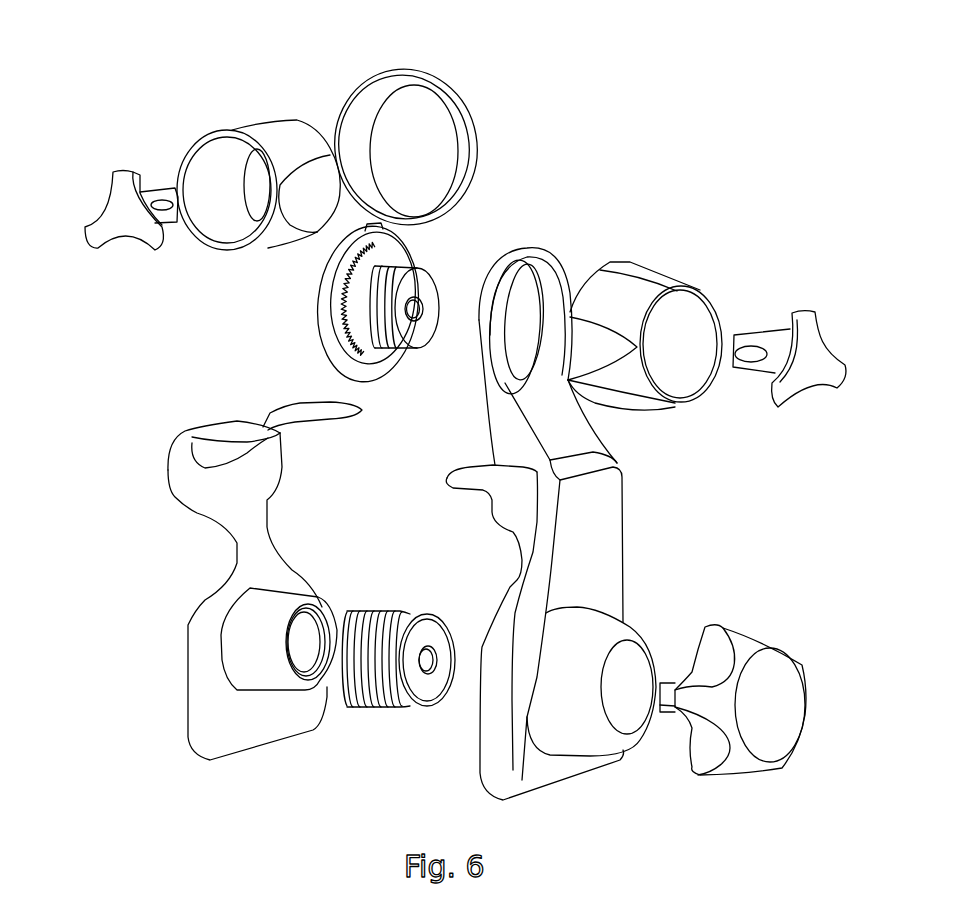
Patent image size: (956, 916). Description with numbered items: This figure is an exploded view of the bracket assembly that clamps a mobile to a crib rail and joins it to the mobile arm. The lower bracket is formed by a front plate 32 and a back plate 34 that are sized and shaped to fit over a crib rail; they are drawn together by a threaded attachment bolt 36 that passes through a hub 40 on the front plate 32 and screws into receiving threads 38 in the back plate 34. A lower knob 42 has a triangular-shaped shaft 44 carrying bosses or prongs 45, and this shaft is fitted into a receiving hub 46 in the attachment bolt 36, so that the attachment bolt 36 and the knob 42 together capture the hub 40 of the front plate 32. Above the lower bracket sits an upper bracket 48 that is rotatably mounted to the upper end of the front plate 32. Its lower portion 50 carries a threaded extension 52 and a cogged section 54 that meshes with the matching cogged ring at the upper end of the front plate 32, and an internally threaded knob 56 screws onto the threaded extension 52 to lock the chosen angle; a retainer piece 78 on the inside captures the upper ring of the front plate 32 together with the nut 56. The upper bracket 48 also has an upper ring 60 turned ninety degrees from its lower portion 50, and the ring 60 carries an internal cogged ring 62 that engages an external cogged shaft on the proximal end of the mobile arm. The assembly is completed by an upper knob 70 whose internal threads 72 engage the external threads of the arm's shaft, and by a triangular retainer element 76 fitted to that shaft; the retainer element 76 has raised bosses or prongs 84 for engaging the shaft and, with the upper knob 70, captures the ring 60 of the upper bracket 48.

The front plate 32 is at (577, 508).
The back plate 34 is at (260, 586).
The threaded attachment bolt 36 is at (383, 703).
The receiving threads 38 is at (322, 640).
The hub 40 is at (630, 630).
The knob 42 is at (800, 660).
The triangular-shaped shaft 44 is at (666, 711).
The bosses or prongs 45 is at (668, 688).
The receiving hub 46 is at (482, 200).
The upper bracket 48 is at (414, 250).
The lower portion 50 is at (427, 278).
The threaded extension 52 is at (357, 337).
The cogged section 54 is at (537, 297).
The internally threaded knob 56 is at (693, 280).
The upper ring 60 is at (407, 129).
The internal cogged ring 62 is at (380, 117).
The upper knob 70 is at (255, 196).
The internal threads 72 is at (258, 196).
The triangular retainer element 76 is at (115, 195).
The retainer piece 78 is at (740, 343).
The raised bosses or prongs 84 is at (166, 188).